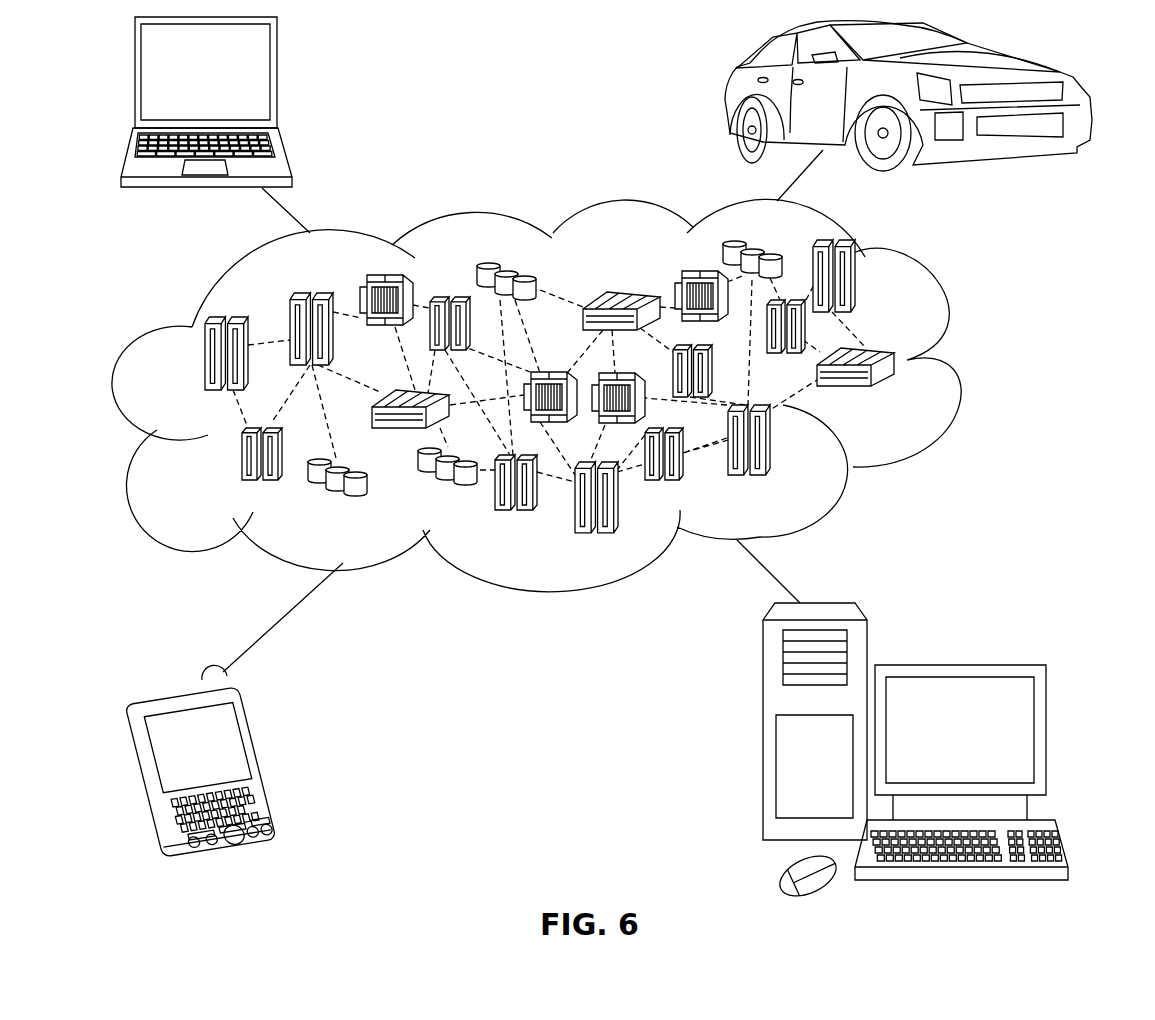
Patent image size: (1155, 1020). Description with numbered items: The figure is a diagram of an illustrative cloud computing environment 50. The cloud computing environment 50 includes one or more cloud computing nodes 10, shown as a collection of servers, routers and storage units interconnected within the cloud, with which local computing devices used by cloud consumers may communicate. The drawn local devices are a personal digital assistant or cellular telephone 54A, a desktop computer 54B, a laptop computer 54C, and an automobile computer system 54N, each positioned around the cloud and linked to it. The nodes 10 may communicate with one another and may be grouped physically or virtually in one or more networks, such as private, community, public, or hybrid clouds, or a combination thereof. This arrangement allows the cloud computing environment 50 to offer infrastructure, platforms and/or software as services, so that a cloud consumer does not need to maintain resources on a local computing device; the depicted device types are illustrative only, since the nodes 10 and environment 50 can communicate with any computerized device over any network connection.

The cloud computing node 10 is at (897, 395).
The cloud computing environment 50 is at (958, 362).
The personal digital assistant or cellular telephone 54A is at (266, 758).
The desktop computer 54B is at (957, 663).
The laptop computer 54C is at (277, 80).
The automobile computer system 54N is at (730, 98).